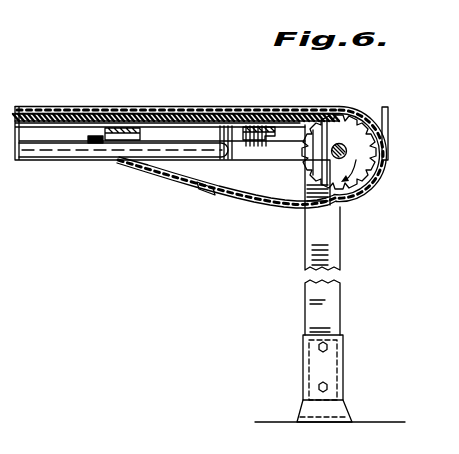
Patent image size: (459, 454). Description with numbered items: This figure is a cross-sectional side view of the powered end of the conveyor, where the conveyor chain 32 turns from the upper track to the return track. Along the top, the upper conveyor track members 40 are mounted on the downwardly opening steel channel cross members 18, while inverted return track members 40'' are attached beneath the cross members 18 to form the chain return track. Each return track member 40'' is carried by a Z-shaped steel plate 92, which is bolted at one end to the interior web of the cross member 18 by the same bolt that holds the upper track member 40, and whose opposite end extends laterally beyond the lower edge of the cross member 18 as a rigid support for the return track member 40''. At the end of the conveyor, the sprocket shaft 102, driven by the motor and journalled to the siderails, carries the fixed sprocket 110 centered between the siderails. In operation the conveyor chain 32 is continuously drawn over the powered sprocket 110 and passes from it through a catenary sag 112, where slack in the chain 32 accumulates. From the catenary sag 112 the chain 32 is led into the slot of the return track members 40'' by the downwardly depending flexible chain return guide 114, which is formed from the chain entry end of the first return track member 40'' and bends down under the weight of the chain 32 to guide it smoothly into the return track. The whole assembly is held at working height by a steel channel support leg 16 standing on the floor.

The conveyor track member 40 is at (177, 84).
The return track member 40'' is at (123, 175).
The cross member 18 is at (252, 134).
The catenary sag 112 is at (372, 113).
The sprocket shaft 102 is at (348, 151).
The sprocket 110 is at (374, 171).
The Z-shaped steel plate 92 is at (113, 143).
The flexible chain return guide 114 is at (182, 180).
The conveyor chain 32 is at (267, 214).
The support leg 16 is at (332, 312).